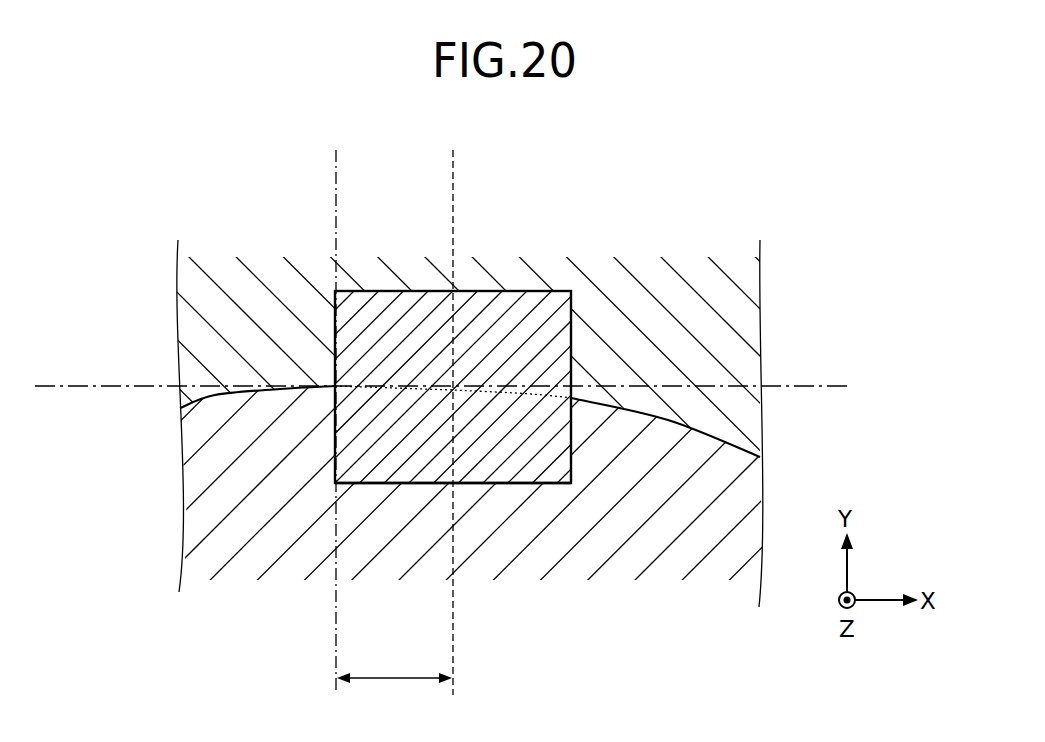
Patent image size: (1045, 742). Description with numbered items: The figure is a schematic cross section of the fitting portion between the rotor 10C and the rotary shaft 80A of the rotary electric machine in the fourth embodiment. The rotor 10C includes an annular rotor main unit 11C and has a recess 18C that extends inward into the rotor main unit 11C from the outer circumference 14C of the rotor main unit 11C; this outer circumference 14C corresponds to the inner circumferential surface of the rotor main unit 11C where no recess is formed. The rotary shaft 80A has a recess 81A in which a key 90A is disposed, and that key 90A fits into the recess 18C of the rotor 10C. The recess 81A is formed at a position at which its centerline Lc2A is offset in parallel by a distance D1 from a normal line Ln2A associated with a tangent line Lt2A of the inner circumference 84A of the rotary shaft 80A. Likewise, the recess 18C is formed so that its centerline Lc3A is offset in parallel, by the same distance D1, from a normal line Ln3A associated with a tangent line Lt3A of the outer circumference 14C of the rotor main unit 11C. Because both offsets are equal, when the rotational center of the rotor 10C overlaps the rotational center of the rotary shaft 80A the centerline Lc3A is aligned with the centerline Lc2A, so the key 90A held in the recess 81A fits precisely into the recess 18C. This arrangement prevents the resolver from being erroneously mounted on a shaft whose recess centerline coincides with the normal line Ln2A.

The rotor 10C is at (156, 581).
The rotary shaft 80A is at (225, 272).
The rotor main unit 11C is at (637, 553).
The outer circumference 14C is at (220, 393).
The inner circumference 84A is at (668, 420).
The embedded block 90A is at (397, 317).
The recess 81A is at (546, 284).
The recess 18C is at (500, 488).
The normal line Ln2A is at (334, 160).
The normal line Ln3A is at (334, 658).
The centerline Lc2A is at (455, 158).
The centerline Lc3A is at (455, 663).
The tangent line Lt3A is at (88, 383).
The tangent line Lt2A is at (817, 383).
The distance D1 is at (394, 689).